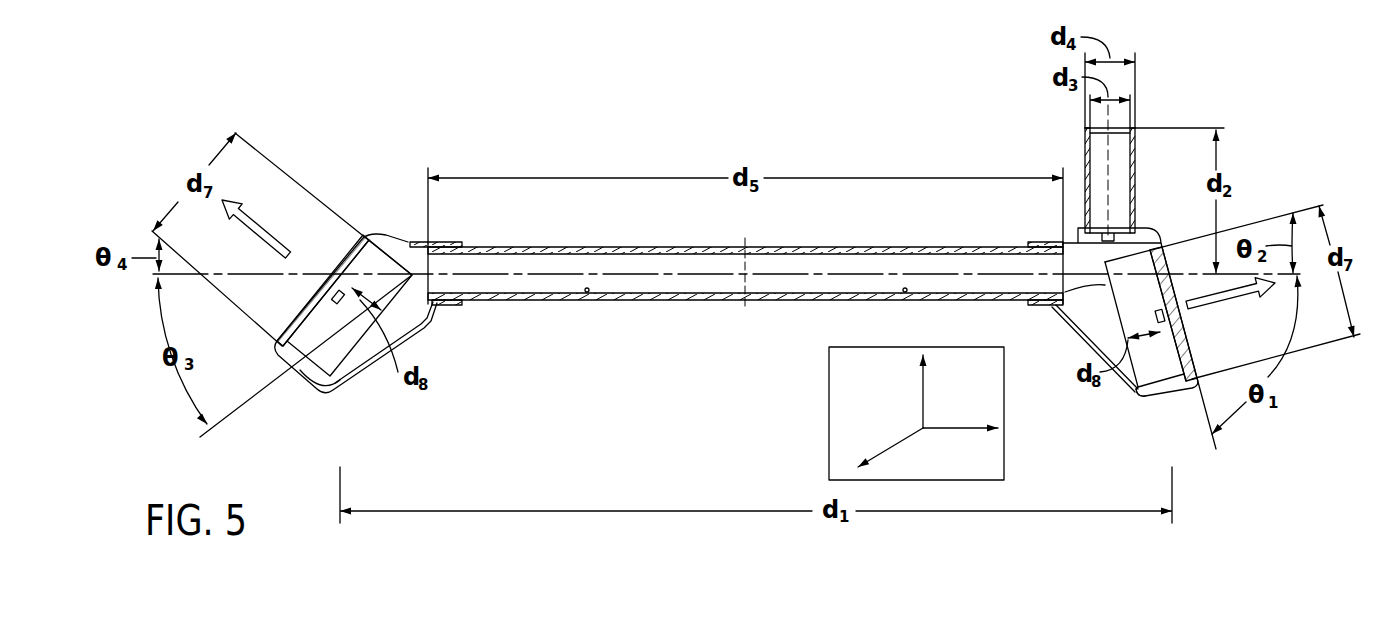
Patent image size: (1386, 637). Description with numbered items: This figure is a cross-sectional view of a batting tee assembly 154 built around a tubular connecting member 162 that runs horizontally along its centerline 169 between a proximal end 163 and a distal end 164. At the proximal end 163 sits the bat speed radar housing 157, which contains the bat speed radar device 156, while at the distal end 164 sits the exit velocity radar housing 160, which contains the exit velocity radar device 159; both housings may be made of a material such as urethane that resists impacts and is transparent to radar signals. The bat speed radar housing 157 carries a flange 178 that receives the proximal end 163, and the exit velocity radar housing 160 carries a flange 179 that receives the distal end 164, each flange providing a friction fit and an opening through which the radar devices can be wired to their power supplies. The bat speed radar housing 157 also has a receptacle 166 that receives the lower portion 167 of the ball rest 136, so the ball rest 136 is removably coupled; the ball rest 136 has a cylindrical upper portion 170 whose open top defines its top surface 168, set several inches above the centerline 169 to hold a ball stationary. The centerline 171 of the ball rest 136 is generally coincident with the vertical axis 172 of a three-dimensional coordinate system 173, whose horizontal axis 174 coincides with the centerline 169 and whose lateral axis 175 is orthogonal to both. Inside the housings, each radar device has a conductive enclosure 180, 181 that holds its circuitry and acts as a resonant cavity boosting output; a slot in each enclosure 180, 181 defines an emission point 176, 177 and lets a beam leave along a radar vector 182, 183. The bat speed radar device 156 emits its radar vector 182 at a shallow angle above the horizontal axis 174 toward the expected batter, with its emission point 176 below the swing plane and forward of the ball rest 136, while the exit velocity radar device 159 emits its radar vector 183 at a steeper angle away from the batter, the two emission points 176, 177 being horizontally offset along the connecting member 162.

The ball rest 136 is at (1106, 165).
The batting tee assembly 154 is at (726, 269).
The bat speed radar device 156 is at (1090, 340).
The bat speed radar housing 157 is at (1130, 327).
The exit velocity radar device 159 is at (424, 326).
The exit velocity radar housing 160 is at (367, 328).
The connecting member 162 is at (785, 301).
The proximal end 163 is at (1045, 262).
The distal end 164 is at (427, 252).
The receptacle 166 is at (1152, 244).
The lower portion 167 is at (1106, 232).
The top surface 168 is at (1125, 128).
The centerline 169 is at (667, 276).
The upper portion 170 is at (1083, 153).
The centerline 171 is at (1100, 131).
The vertical axis 172 is at (923, 383).
The three-dimensional coordinate system 173 is at (888, 413).
The horizontal axis 174 is at (960, 430).
The lateral axis 175 is at (893, 447).
The emission point 176 is at (1163, 316).
The emission point 177 is at (338, 312).
The flange 178 is at (1037, 304).
The flange 179 is at (455, 303).
The enclosure 180 is at (1137, 390).
The enclosure 181 is at (343, 352).
The radar vector 182 is at (1237, 301).
The radar vector 183 is at (252, 212).